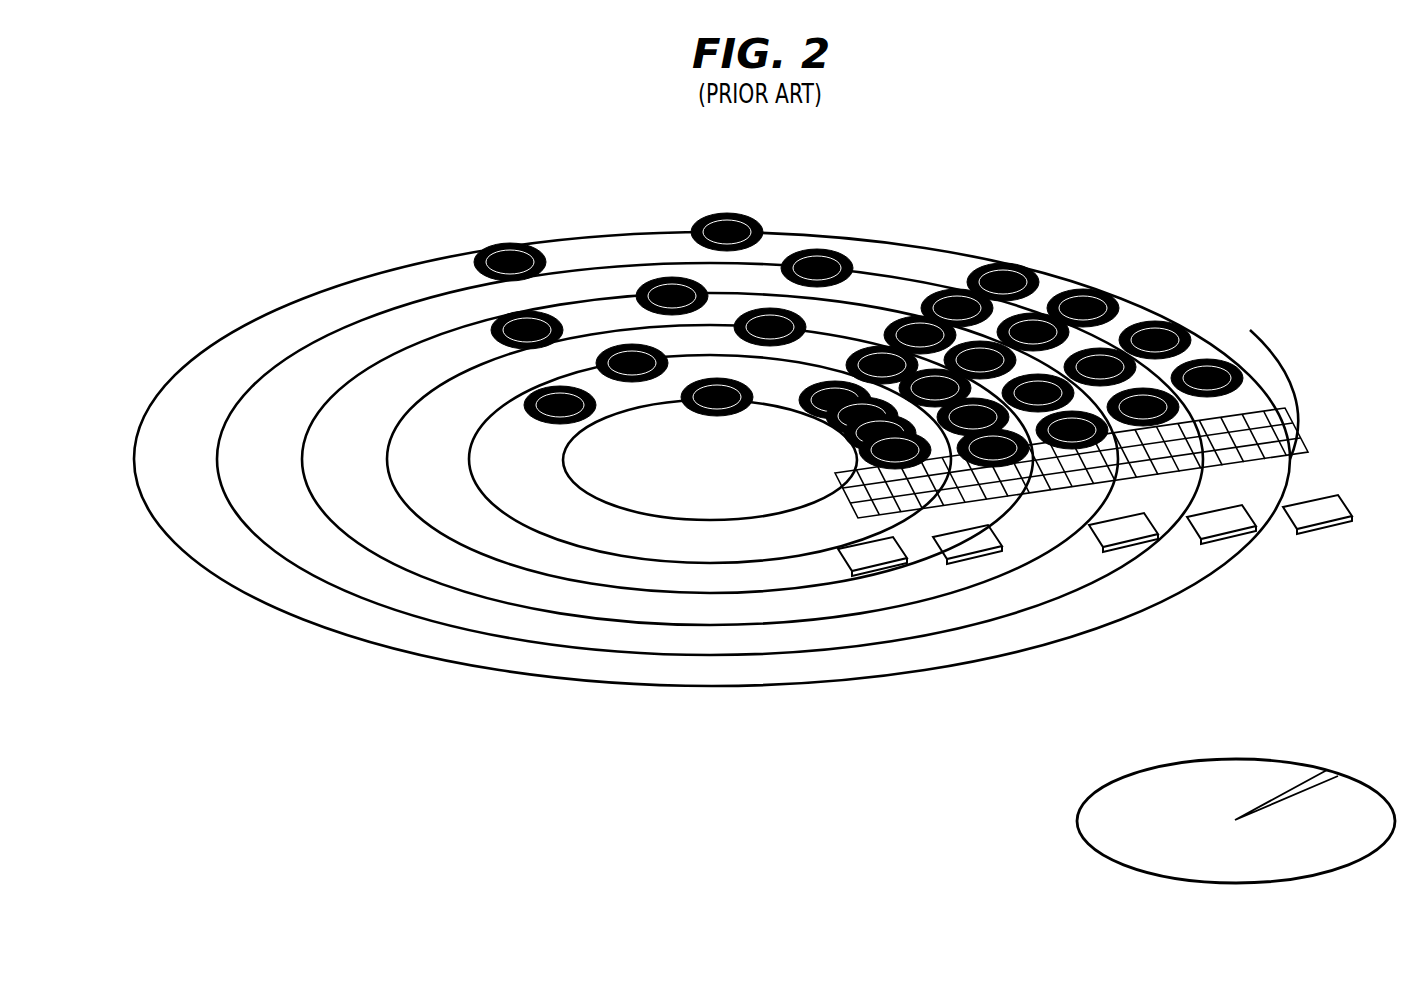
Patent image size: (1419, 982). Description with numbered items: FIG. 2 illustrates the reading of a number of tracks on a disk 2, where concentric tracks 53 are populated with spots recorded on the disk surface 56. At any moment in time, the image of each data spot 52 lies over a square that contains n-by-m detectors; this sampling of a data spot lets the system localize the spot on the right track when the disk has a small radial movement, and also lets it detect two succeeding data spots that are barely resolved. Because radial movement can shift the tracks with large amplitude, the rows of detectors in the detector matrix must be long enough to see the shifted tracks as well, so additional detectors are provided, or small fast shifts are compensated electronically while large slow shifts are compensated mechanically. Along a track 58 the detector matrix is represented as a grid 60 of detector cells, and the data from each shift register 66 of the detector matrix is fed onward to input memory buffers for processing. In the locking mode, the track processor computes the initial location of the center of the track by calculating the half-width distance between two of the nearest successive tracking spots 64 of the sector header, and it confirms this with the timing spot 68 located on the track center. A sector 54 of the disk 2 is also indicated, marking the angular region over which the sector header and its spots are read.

The disk 2 is at (1098, 789).
The data spot 52 is at (1100, 292).
The tracks 53 is at (950, 252).
The sector wedge 54 is at (1322, 775).
The disk surface 56 is at (1112, 603).
The track 58 is at (1302, 434).
The sector grid 60 is at (1287, 407).
The tracking spots 64 is at (822, 252).
The shift register 66 is at (1325, 513).
The timing spot 68 is at (512, 250).